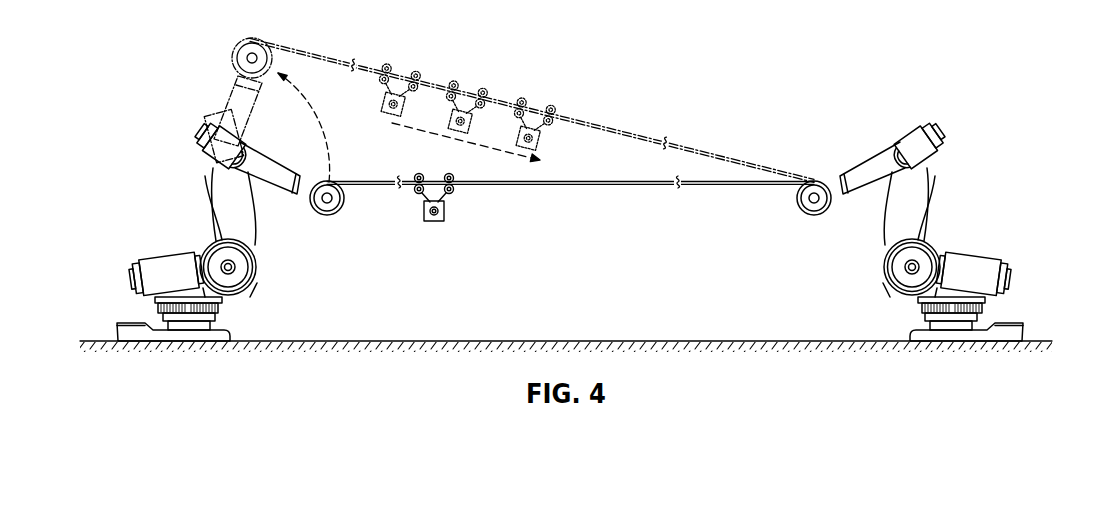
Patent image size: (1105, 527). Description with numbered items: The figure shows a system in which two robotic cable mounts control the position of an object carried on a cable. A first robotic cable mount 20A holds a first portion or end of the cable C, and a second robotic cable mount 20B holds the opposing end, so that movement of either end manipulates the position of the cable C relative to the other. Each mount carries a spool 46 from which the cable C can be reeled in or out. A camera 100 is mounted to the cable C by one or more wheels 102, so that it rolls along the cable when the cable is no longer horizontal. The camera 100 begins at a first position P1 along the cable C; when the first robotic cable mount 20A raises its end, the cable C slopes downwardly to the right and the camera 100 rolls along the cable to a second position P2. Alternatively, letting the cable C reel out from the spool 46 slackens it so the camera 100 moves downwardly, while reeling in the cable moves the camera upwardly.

The first robotic cable mount 20A is at (285, 271).
The second robotic cable mount 20B is at (1008, 236).
The spool 46 is at (337, 214).
The cable C is at (630, 136).
The camera 100 is at (384, 97).
The wheels 102 is at (416, 72).
The first position P1 is at (380, 118).
The second position P2 is at (552, 146).